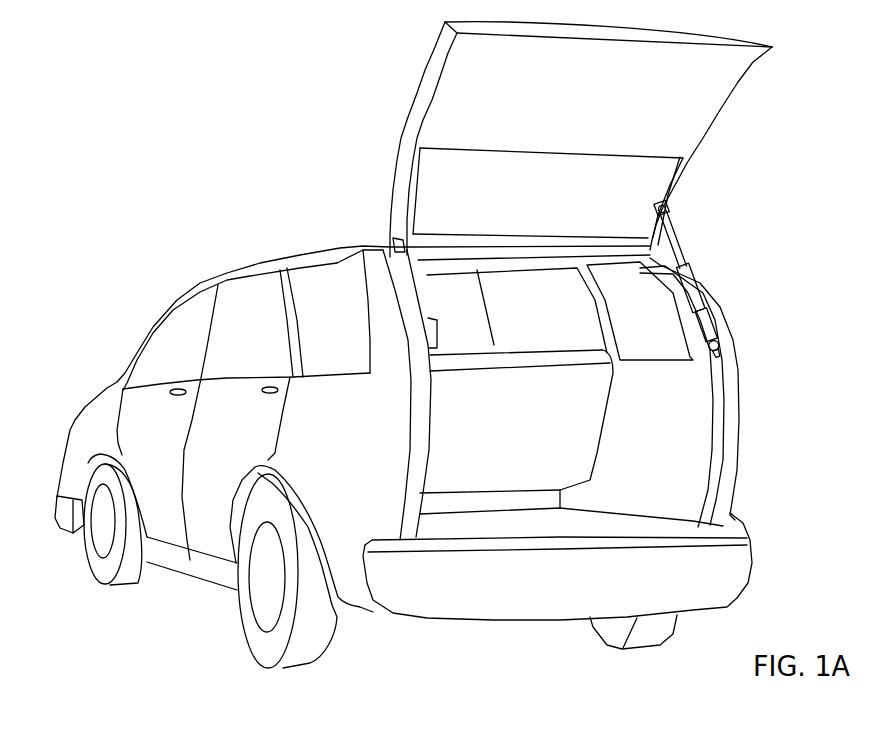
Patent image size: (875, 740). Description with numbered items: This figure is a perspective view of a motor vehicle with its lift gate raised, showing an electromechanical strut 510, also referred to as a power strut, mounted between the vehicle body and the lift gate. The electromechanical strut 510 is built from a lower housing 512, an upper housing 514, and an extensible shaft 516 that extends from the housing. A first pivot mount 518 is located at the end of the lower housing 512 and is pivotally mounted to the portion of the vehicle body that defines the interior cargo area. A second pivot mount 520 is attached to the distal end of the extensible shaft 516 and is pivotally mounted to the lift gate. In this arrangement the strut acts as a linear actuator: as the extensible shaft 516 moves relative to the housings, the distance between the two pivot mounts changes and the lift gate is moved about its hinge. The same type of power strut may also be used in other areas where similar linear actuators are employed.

The electromechanical strut 510 is at (577, 294).
The lower housing 512 is at (710, 327).
The upper housing 514 is at (704, 301).
The extensible shaft 516 is at (676, 252).
The first pivot mount 518 is at (718, 357).
The second pivot mount 520 is at (663, 208).